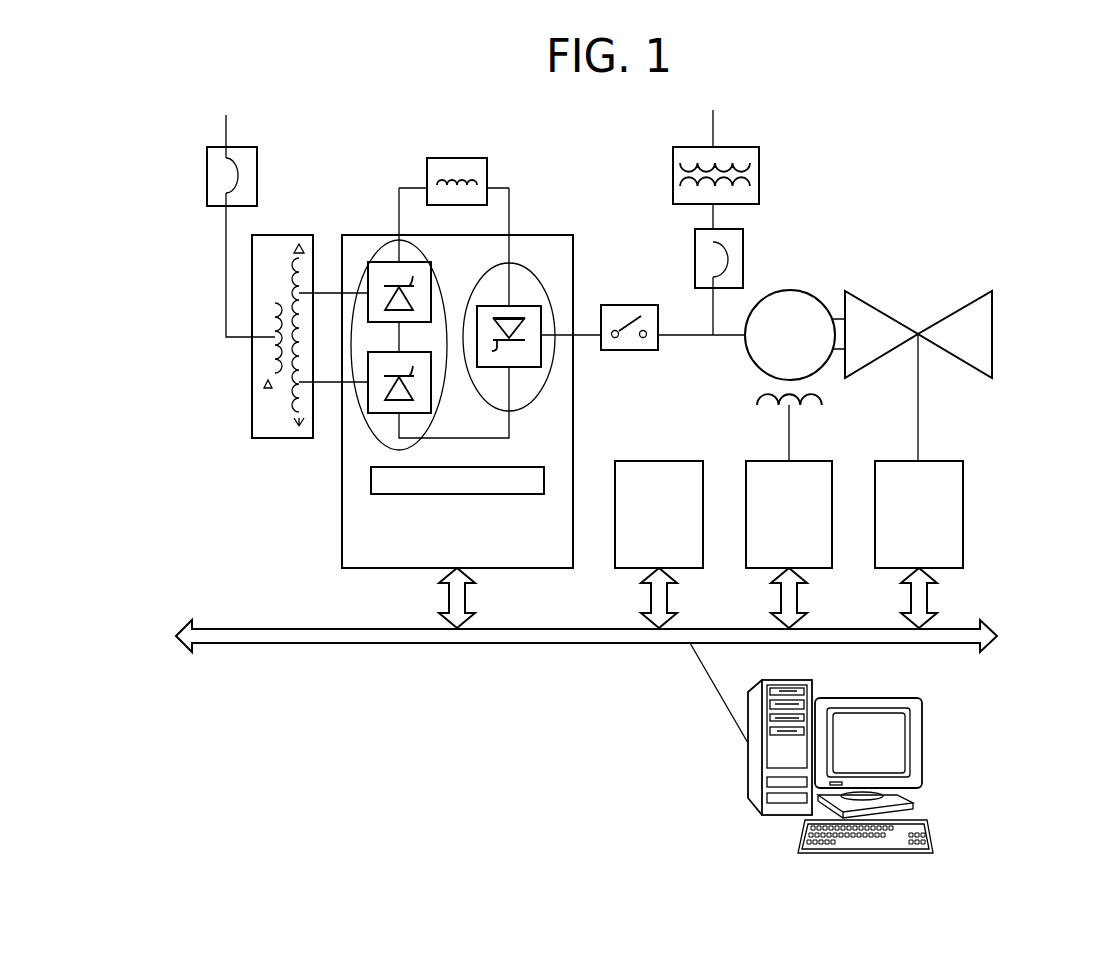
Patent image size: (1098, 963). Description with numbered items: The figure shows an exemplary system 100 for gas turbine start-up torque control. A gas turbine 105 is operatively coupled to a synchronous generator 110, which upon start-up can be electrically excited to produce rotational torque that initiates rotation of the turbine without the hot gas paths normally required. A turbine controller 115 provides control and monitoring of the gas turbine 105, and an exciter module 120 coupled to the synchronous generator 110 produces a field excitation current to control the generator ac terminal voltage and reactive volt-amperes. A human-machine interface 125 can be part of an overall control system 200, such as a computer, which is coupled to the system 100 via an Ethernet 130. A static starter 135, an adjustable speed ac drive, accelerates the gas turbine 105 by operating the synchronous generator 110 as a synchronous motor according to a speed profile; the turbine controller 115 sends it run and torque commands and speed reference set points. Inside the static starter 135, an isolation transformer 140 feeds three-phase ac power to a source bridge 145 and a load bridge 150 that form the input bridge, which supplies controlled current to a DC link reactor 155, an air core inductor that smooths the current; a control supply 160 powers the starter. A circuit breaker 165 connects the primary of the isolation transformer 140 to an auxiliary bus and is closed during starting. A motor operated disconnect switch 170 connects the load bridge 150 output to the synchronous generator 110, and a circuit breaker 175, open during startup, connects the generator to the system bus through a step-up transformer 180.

The system 100 is at (180, 118).
The gas turbine 105 is at (993, 334).
The synchronous generator 110 is at (790, 291).
The turbine controller 115 is at (965, 497).
The exciter module 120 is at (810, 461).
The human-machine interface 125 is at (683, 461).
The Ethernet 130 is at (955, 645).
The static starter 135 is at (548, 235).
The isolation transformer 140 is at (252, 362).
The source bridge 145 is at (382, 253).
The load bridge 150 is at (552, 402).
The DC link reactor 155 is at (457, 158).
The control supply 160 is at (381, 475).
The circuit breaker 165 is at (207, 177).
The motor operated disconnect switch 170 is at (624, 305).
The circuit breaker 175 is at (745, 266).
The step-up transformer 180 is at (759, 172).
The control system 200 is at (922, 741).